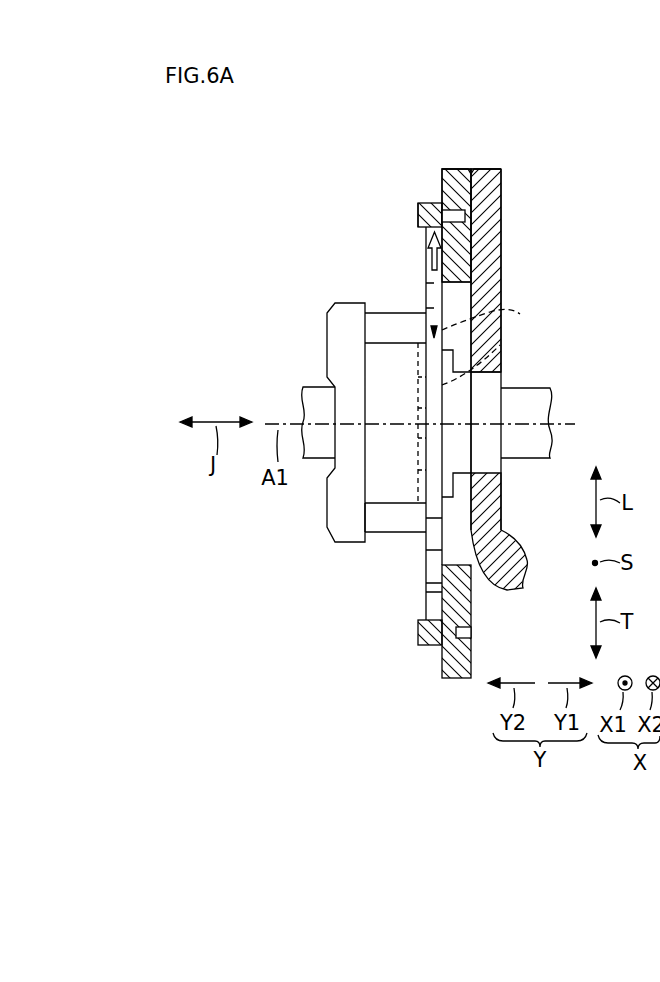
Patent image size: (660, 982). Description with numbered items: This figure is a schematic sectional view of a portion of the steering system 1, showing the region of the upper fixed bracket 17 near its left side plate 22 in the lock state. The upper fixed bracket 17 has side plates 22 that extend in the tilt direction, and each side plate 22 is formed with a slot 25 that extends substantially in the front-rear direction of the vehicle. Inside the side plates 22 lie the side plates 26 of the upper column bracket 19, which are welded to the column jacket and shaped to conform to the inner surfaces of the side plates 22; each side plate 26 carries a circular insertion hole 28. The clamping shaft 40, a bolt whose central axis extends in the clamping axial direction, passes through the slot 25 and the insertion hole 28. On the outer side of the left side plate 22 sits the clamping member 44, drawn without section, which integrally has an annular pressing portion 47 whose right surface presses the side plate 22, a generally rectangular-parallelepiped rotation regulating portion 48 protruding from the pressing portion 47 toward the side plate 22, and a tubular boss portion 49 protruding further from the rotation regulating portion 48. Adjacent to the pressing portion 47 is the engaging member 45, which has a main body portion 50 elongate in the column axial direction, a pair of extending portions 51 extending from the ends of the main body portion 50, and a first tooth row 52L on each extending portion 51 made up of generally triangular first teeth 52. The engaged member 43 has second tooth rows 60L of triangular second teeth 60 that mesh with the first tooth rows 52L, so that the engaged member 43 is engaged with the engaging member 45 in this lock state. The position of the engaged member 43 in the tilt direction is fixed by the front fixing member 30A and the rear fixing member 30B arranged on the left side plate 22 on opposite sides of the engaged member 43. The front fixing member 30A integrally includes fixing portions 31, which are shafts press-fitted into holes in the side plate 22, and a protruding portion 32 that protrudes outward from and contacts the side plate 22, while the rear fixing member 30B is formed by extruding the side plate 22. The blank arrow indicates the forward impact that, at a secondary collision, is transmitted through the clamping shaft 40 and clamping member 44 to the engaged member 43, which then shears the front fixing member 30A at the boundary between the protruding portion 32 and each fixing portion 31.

The steering system 1 is at (538, 273).
The upper fixed bracket 17 is at (451, 167).
The upper column bracket 19 is at (488, 167).
The side plate 22 is at (465, 184).
The slot 25 is at (462, 560).
The side plate 26 is at (495, 247).
The insertion hole 28 is at (488, 466).
The front fixing member 30A is at (415, 211).
The rear fixing member 30B is at (428, 640).
The fixing portion 31 is at (452, 214).
The protruding portion 32 is at (430, 207).
The clamping shaft 40 is at (543, 408).
The engaged member 43 is at (424, 605).
The clamping member 44 is at (329, 538).
The engaging member 45 is at (378, 538).
The pressing portion 47 is at (345, 326).
The rotation regulating portion 48 is at (447, 484).
The boss portion 49 is at (493, 383).
The main body portion 50 is at (407, 523).
The extending portion 51 is at (383, 356).
The first tooth 52 is at (462, 360).
The first tooth row 52L is at (507, 342).
The second tooth 60 is at (432, 309).
The second tooth row 60L is at (422, 271).